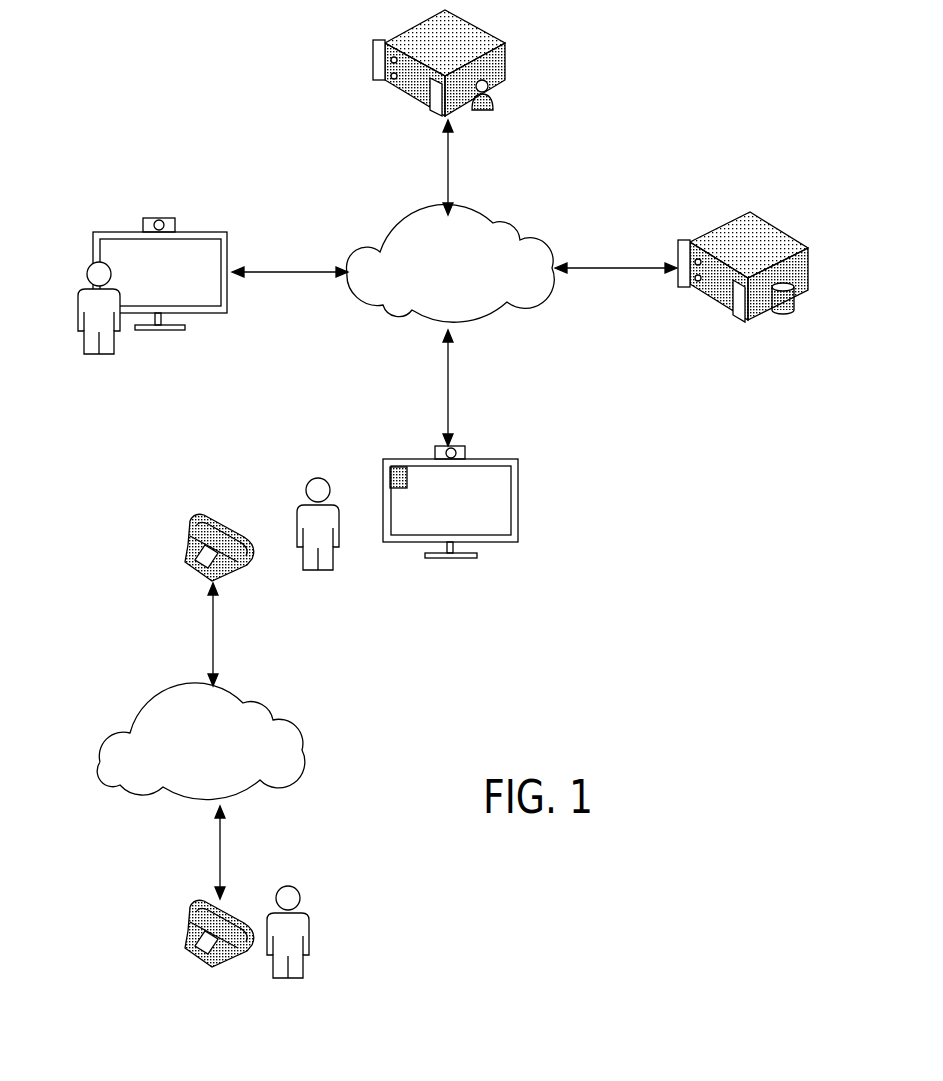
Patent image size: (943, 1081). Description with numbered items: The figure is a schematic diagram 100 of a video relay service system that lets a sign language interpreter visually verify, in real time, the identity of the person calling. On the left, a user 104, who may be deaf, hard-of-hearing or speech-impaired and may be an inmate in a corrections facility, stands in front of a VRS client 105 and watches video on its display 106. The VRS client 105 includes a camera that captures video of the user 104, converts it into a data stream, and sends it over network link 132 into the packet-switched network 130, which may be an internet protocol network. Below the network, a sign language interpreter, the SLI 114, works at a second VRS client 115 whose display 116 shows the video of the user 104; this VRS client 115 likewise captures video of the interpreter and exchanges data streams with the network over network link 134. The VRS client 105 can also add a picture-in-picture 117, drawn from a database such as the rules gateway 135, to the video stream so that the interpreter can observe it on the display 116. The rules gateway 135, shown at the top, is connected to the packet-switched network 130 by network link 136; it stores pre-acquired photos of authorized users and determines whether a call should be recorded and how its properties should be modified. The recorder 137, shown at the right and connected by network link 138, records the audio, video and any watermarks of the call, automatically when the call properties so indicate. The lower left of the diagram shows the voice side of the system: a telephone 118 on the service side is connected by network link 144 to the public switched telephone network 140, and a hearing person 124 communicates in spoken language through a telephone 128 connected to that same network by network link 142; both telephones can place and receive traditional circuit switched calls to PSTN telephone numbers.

The schematic diagram 100 is at (127, 58).
The user 104 is at (77, 298).
The VRS client 105 is at (157, 218).
The display 106 is at (123, 232).
The SLI 114 is at (293, 512).
The VRS client 115 is at (468, 453).
The display 116 is at (413, 459).
The picture-in-picture 117 is at (402, 476).
The telephone 118 is at (187, 557).
The hearing person 124 is at (313, 932).
The telephone 128 is at (187, 947).
The packet-switched network 130 is at (503, 224).
The network link 132 is at (275, 272).
The network link 134 is at (447, 393).
The rules gateway 135 is at (508, 63).
The network link 136 is at (448, 188).
The recorder 137 is at (783, 232).
The network link 138 is at (630, 270).
The public switched telephone network 140 is at (98, 762).
The network link 142 is at (217, 858).
The network link 144 is at (210, 643).